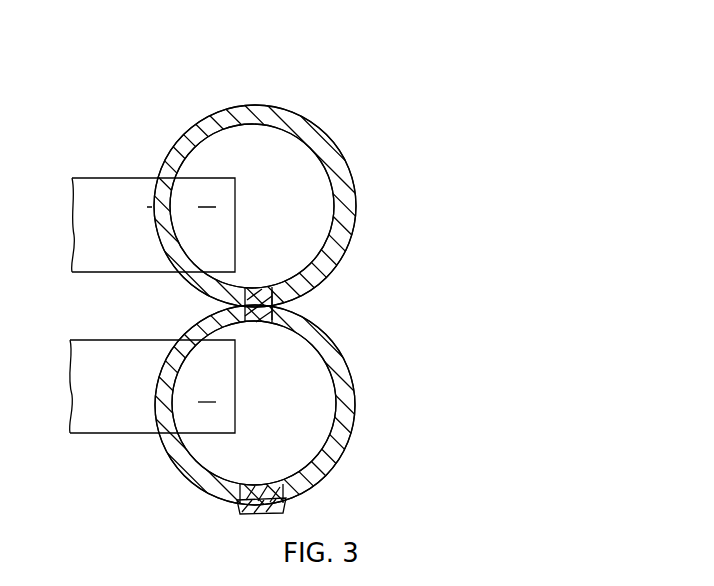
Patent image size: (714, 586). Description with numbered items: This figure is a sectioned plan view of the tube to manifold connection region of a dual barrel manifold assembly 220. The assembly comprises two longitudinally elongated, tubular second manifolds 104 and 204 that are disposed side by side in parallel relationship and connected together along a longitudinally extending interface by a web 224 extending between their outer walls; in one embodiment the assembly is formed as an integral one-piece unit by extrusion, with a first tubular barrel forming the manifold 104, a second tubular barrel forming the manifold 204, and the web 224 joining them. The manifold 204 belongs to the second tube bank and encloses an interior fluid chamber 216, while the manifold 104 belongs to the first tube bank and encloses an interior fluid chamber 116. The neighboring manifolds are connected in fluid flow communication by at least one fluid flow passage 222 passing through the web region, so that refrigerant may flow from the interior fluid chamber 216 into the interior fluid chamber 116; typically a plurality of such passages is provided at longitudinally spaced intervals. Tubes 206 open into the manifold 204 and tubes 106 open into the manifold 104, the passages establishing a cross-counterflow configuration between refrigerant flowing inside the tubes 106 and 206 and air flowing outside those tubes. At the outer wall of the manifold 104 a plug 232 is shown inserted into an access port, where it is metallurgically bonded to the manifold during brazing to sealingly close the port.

The manifold assembly 220 is at (283, 92).
The second manifold 204 is at (336, 142).
The interior fluid chamber 216 is at (297, 171).
The tubes 206 is at (137, 178).
The fluid flow passage 222 is at (258, 290).
The web 224 is at (286, 302).
The second manifold 104 is at (339, 455).
The interior fluid chamber 116 is at (313, 441).
The tubes 106 is at (72, 434).
The plug 232 is at (251, 505).